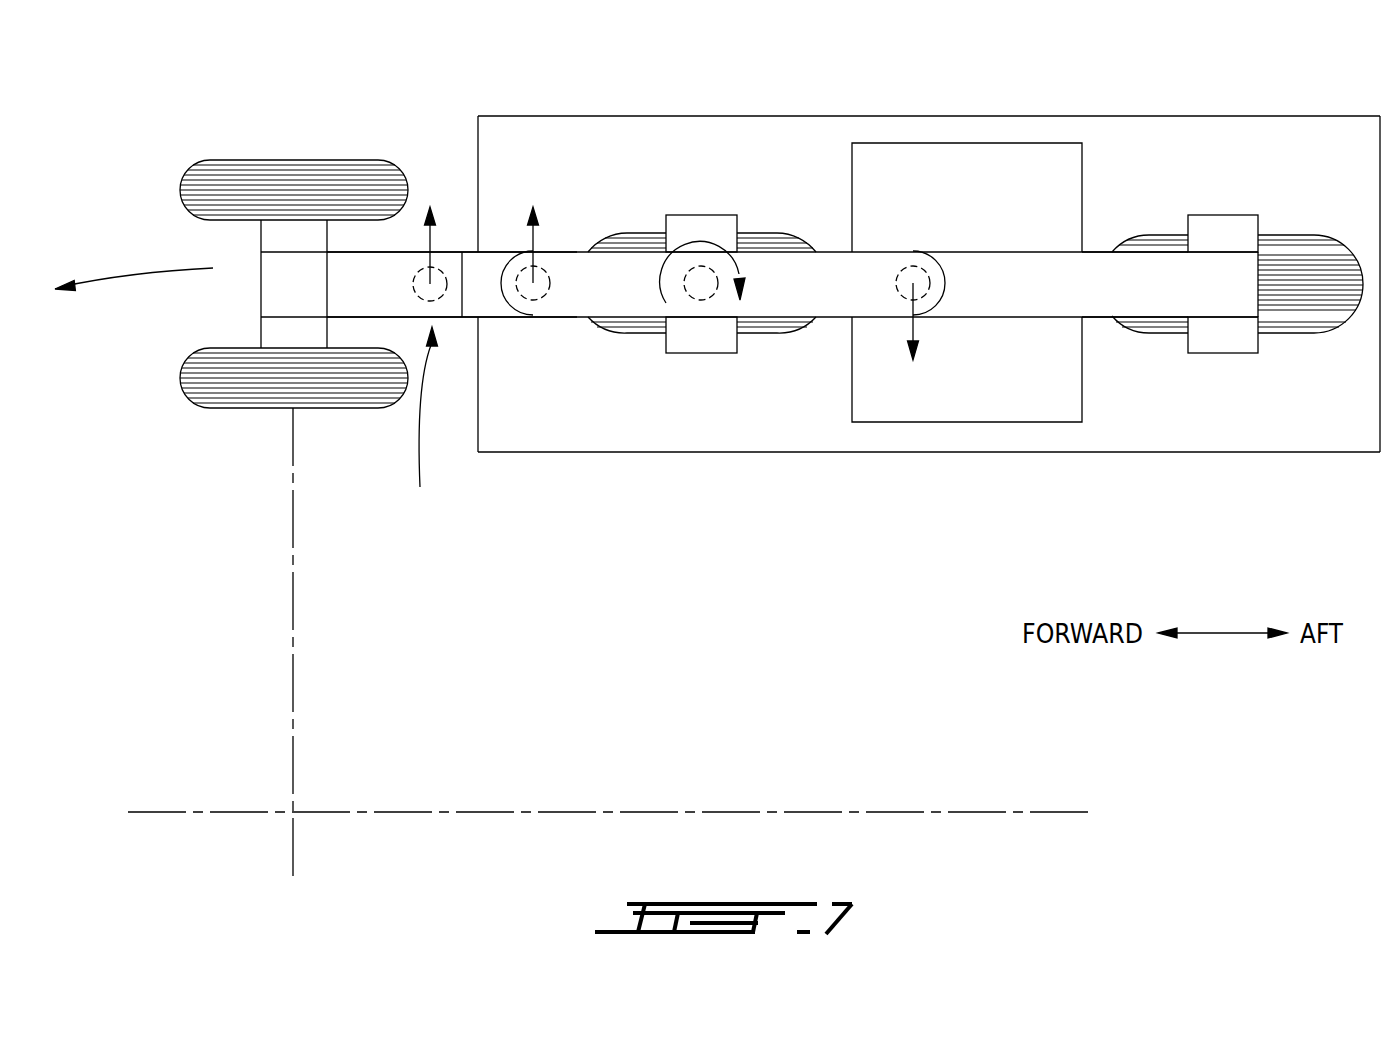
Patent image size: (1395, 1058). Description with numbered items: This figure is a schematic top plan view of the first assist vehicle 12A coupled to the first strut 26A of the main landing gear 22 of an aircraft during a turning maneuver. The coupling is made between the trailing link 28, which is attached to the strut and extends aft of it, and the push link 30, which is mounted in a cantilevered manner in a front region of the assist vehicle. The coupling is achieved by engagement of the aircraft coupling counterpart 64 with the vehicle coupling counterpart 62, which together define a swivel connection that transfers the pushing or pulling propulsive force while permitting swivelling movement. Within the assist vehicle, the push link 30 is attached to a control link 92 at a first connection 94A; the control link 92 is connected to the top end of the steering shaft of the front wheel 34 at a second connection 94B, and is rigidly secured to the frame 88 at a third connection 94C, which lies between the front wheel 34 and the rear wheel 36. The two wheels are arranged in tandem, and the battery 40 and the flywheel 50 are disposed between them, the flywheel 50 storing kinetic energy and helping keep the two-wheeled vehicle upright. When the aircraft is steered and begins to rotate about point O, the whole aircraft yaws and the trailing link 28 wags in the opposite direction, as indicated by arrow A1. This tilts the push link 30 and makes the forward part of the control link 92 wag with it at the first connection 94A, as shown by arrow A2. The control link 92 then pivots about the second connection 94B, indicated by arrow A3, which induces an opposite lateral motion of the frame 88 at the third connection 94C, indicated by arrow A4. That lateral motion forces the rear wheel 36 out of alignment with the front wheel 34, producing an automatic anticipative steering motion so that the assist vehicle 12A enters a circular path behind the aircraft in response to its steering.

The main landing gear 22 is at (171, 257).
The first strut 26A is at (288, 278).
The trailing link 28 is at (369, 273).
The push link 30 is at (470, 262).
The first assist vehicle 12A is at (612, 116).
The control link 92 is at (603, 282).
The front wheel 34 is at (767, 330).
The rear wheel 36 is at (1300, 305).
The vehicle battery 40 is at (963, 143).
The flywheel 50 is at (963, 422).
The frame 88 is at (1093, 280).
The first connection 94A is at (533, 300).
The second connection 94B is at (701, 300).
The third connection 94C is at (905, 270).
The arrow A1 is at (433, 235).
The arrow A2 is at (535, 238).
The arrow A3 is at (742, 272).
The arrow A4 is at (915, 330).
The aircraft coupling counterpart 64 is at (419, 426).
The vehicle coupling counterpart 62 is at (419, 426).
The point O is at (318, 792).